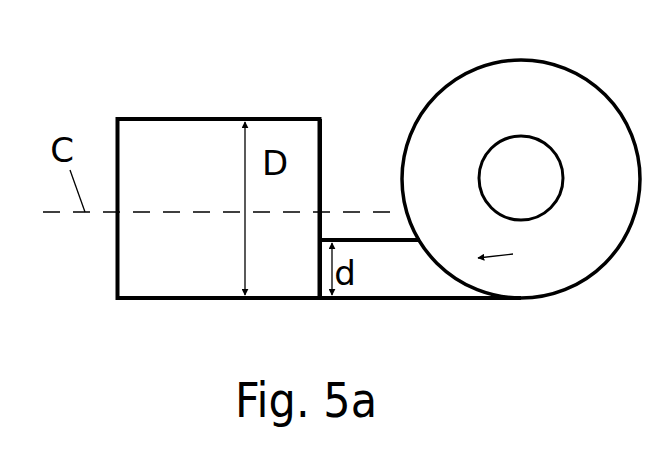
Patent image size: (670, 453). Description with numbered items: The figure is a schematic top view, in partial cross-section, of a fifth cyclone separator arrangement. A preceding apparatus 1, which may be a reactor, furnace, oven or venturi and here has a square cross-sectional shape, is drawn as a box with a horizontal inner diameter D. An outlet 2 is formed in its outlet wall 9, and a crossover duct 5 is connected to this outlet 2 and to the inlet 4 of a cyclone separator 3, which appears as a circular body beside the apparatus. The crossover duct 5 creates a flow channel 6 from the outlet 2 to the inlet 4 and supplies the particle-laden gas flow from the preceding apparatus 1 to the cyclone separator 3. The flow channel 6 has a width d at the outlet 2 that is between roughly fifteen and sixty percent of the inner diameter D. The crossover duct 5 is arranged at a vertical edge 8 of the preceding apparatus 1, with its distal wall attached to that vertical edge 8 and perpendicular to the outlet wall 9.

The preceding apparatus 1 is at (187, 138).
The outlet 2 is at (299, 266).
The cyclone separator 3 is at (552, 93).
The inlet 4 is at (510, 251).
The crossover duct 5 is at (363, 302).
The flow channel 6 is at (411, 288).
The vertical edge 8 is at (322, 302).
The outlet wall 9 is at (322, 170).